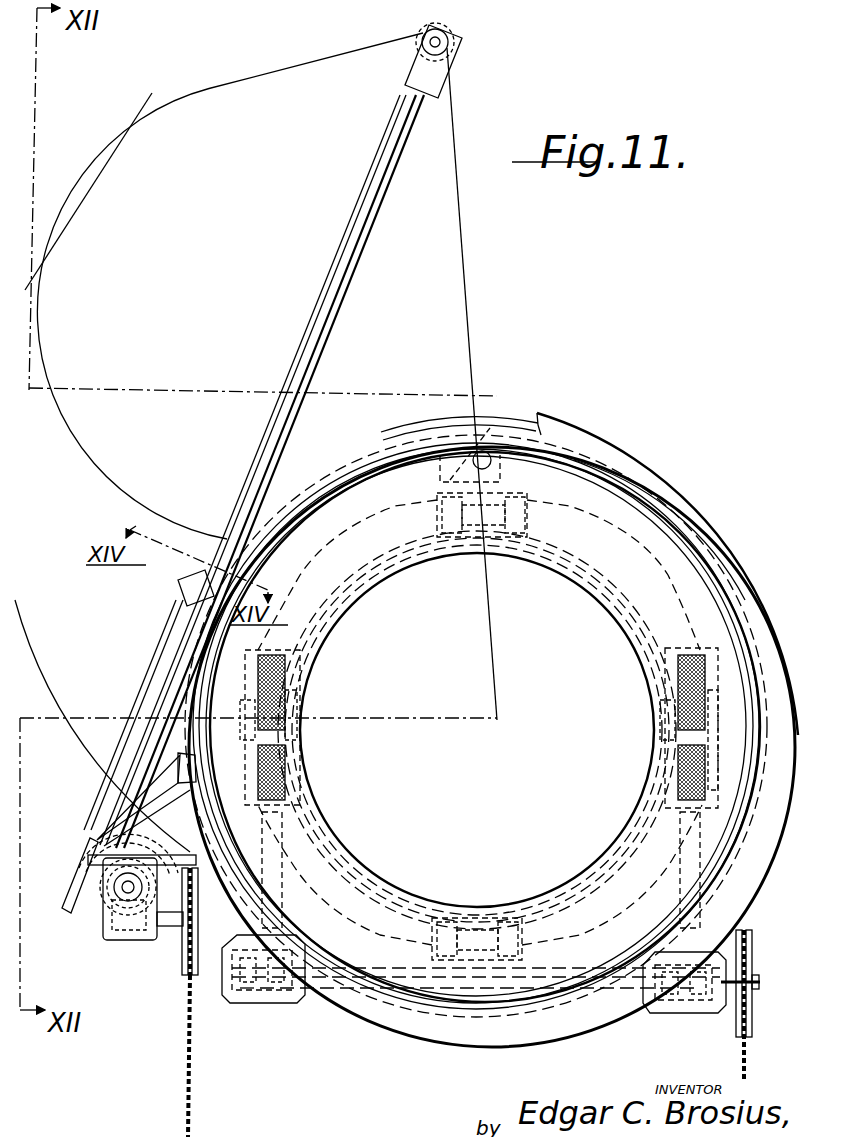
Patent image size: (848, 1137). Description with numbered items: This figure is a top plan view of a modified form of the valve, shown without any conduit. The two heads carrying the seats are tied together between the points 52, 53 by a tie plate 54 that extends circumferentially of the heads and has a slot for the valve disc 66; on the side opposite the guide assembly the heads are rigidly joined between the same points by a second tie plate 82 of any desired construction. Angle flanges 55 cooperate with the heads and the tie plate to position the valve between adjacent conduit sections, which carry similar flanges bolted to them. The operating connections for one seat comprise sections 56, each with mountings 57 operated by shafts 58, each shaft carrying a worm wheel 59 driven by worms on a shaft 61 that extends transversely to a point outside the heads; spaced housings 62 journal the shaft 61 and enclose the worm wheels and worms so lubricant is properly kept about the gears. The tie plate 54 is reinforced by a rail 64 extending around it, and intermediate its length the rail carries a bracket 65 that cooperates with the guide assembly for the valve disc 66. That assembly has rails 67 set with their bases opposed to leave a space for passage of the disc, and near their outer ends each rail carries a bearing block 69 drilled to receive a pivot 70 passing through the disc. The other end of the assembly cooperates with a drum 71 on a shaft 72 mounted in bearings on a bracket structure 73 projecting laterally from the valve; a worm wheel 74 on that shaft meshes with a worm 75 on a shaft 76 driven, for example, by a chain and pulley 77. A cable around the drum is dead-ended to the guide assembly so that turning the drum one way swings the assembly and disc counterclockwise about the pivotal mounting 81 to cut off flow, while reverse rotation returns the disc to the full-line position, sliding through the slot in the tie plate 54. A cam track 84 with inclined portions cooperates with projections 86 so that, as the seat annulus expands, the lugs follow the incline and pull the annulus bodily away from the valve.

The point 52 is at (492, 446).
The point 53 is at (322, 975).
The tie plate 54 is at (318, 488).
The angle flanges 55 is at (467, 1030).
The sections 56 is at (563, 530).
The mountings 57 is at (481, 912).
The shafts 58 is at (318, 860).
The worm wheel 59 is at (266, 998).
The shaft 61 is at (437, 980).
The housings 62 is at (250, 1000).
The rail 64 is at (532, 420).
The bracket 65 is at (190, 590).
The valve disc 66 is at (262, 471).
The rails 67 is at (172, 676).
The bearing block 69 is at (428, 72).
The pivot 70 is at (447, 42).
The drum 71 is at (80, 912).
The shaft 72 is at (122, 897).
The bracket structure 73 is at (100, 836).
The worm wheel 74 is at (100, 876).
The worm 75 is at (132, 932).
The shaft 76 is at (183, 972).
The chain and pulley 77 is at (186, 998).
The pivotal mounting 81 is at (500, 428).
The tie plate 82 is at (655, 507).
The cam track 84 is at (284, 792).
The projections 86 is at (716, 716).